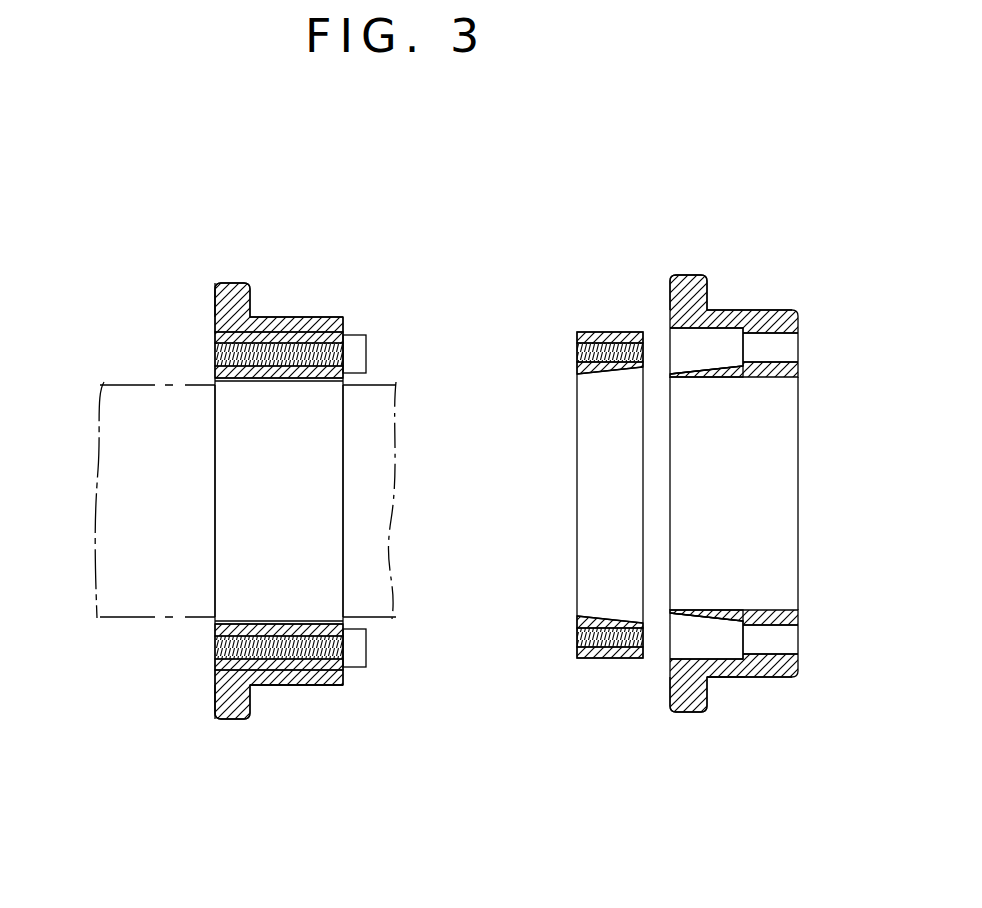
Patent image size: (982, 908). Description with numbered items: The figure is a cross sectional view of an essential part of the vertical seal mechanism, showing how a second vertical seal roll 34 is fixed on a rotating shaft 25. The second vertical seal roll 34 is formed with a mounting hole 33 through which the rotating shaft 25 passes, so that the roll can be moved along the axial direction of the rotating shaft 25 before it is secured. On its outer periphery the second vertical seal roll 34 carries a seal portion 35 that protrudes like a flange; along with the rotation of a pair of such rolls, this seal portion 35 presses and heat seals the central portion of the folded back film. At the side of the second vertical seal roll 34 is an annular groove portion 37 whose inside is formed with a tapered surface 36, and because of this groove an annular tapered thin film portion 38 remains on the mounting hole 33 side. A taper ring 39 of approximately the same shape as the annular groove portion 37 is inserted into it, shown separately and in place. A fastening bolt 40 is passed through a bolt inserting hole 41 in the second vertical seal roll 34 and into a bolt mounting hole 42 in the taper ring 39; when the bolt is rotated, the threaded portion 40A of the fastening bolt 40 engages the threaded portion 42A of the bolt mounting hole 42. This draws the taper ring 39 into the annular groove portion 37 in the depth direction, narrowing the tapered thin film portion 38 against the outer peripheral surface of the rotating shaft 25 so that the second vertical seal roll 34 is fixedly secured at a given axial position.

The rotating shaft 25 is at (100, 485).
The mounting hole 33 is at (772, 430).
The second vertical seal roll 34 is at (313, 325).
The seal portion 35 is at (232, 300).
The tapered surface 36 is at (718, 680).
The annular groove portion 37 is at (685, 348).
The tapered thin film portion 38 is at (712, 380).
The taper ring 39 is at (215, 632).
The fastening bolt 40 is at (353, 648).
The threaded portion of the fastening bolt 40A is at (318, 690).
The bolt inserting hole 41 is at (780, 348).
The bolt mounting hole 42 is at (208, 652).
The threaded portion of the bolt mounting hole 42A is at (221, 358).